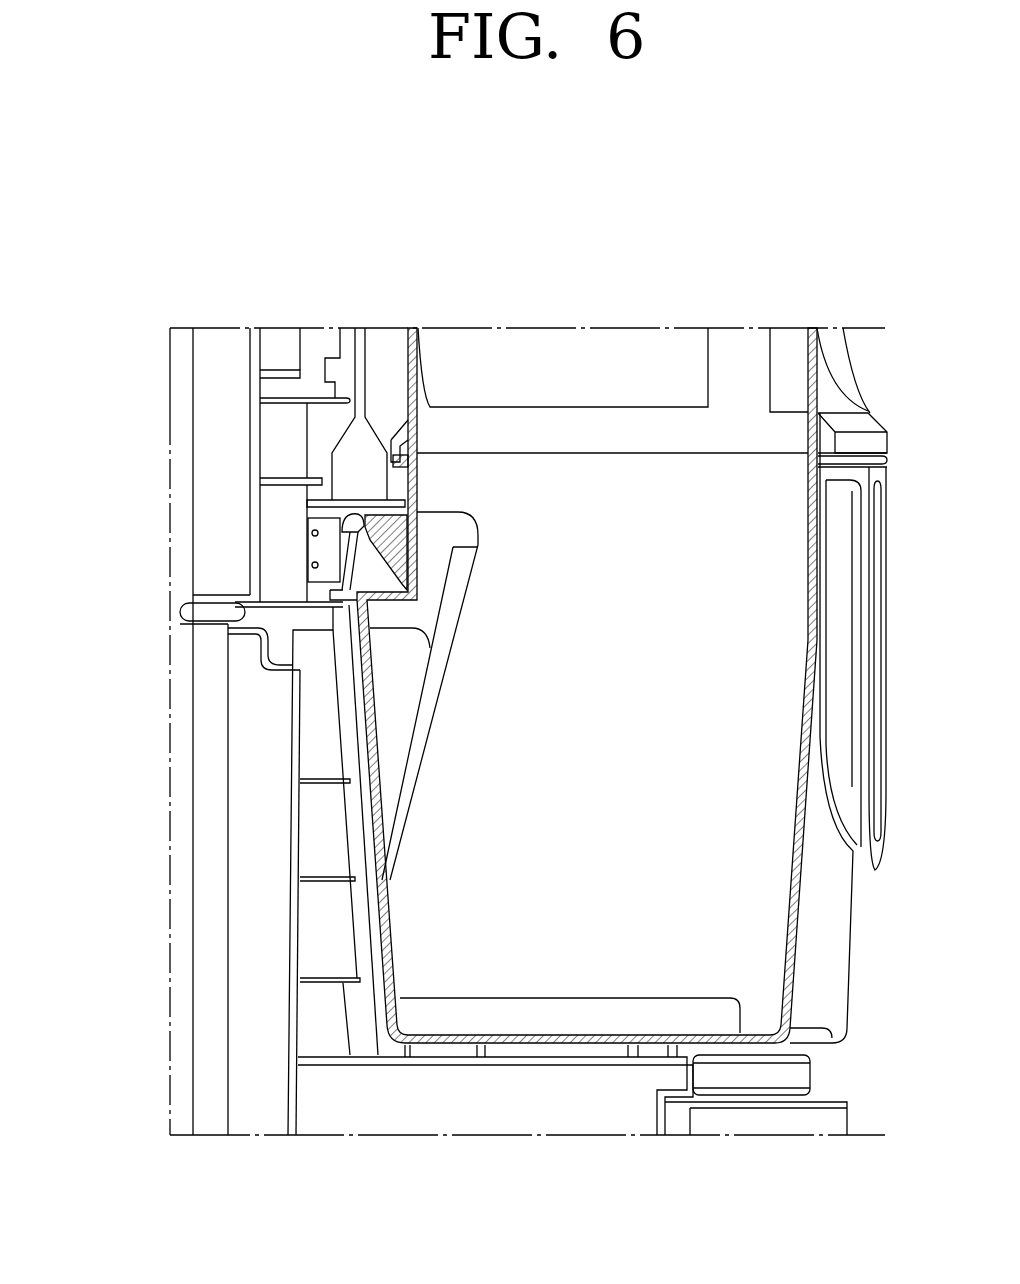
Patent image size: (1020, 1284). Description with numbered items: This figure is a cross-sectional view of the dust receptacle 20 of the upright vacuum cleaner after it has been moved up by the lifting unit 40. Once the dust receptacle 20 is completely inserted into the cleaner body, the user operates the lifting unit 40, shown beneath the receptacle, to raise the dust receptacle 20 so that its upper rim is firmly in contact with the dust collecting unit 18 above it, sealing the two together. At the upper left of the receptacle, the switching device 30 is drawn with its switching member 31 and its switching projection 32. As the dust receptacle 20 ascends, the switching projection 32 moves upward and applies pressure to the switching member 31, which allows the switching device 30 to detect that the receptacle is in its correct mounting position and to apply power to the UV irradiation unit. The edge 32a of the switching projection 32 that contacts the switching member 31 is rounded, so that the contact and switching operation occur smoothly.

The dust collecting unit 18 is at (608, 357).
The dust receptacle 20 is at (723, 940).
The switching device 30 is at (98, 620).
The switching member 31 is at (323, 548).
The switching projection 32 is at (377, 552).
The edge 32a is at (363, 514).
The lifting unit 40 is at (793, 1075).